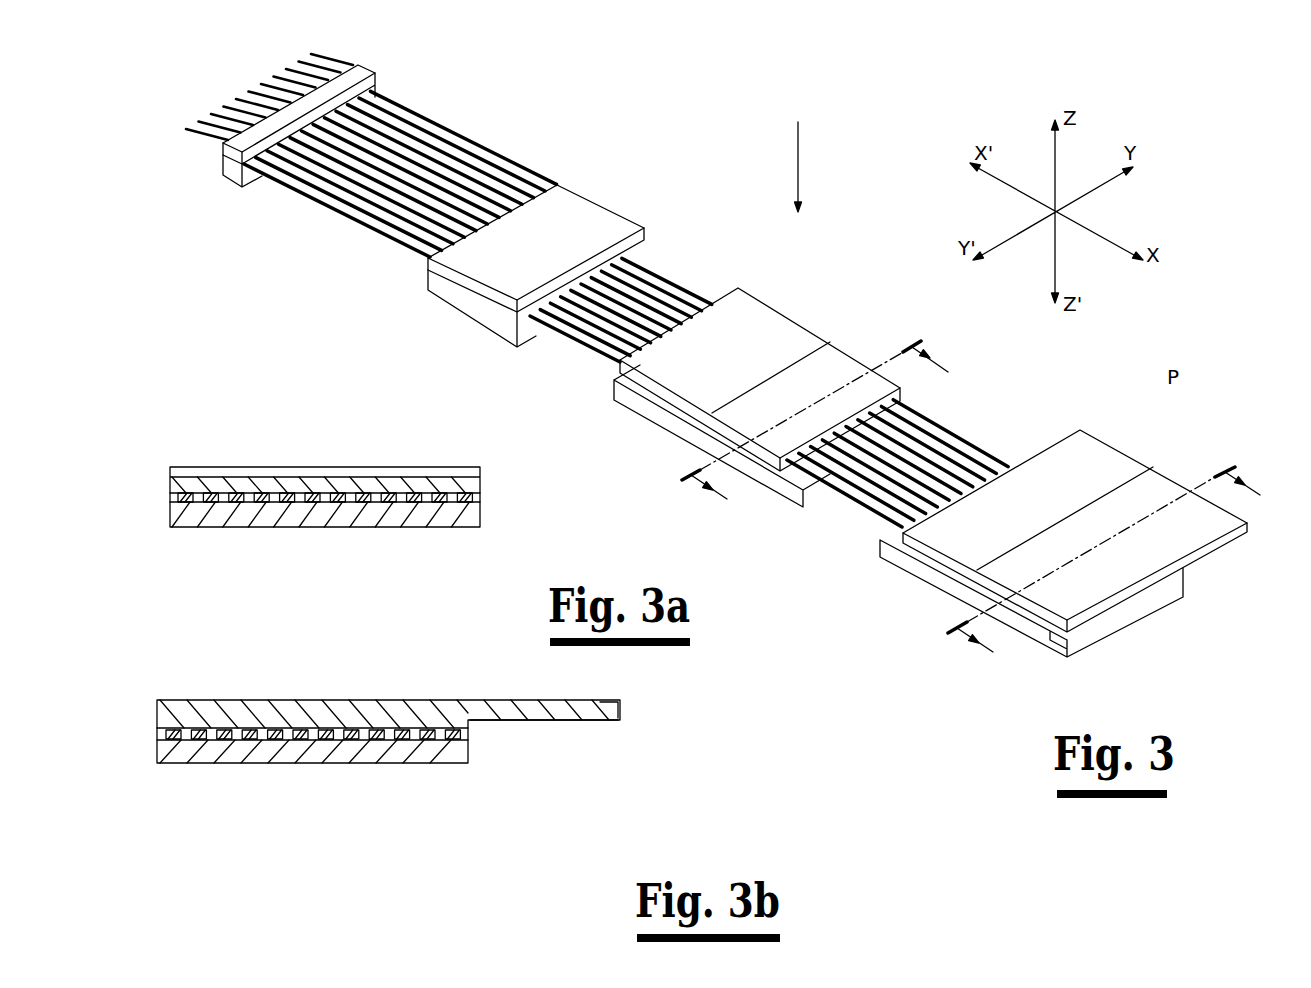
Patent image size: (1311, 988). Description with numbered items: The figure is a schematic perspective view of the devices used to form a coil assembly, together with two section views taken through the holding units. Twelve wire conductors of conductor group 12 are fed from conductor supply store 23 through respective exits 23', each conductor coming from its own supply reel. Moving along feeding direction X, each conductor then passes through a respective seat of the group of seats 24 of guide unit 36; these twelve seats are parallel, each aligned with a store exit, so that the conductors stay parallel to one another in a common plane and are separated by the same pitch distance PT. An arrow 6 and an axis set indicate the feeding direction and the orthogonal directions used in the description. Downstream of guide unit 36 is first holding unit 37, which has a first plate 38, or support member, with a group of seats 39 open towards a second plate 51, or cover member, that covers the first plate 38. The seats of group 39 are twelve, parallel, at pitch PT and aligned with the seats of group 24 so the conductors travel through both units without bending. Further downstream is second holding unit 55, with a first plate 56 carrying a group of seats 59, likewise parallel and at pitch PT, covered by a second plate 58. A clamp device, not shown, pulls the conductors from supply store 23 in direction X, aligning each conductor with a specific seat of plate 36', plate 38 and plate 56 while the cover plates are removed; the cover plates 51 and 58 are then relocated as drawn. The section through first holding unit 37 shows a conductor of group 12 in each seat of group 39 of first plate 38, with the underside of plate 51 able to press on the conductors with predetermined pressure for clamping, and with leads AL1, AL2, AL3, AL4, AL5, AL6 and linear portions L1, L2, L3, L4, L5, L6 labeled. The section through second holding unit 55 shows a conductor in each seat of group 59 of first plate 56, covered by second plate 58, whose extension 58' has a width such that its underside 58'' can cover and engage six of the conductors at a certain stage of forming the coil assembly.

In FIG. 3, the conductor group 12 is at (562, 57).
In FIG. 3B, the conductor group 12 is at (493, 737).
In FIG. 3, the conductor supply store 23 is at (256, 119).
In FIG. 3, the exits 23' is at (318, 99).
In FIG. 3, the pitch distance PT is at (332, 203).
In FIG. 3, the guide unit 36 is at (486, 243).
In FIG. 3, the plate of guide unit 36' is at (536, 223).
In FIG. 3, the group of seats 24 is at (667, 233).
In FIG. 3, the direction indicator 6 is at (798, 150).
In FIG. 3, the first holding unit 37 is at (625, 443).
In FIG. 3, the second plate 51 is at (770, 338).
In FIG. 3A, the second plate 51 is at (278, 478).
In FIG. 3, the first plate 38 is at (675, 423).
In FIG. 3A, the first plate 38 is at (323, 515).
In FIG. 3, the second holding unit 55 is at (883, 612).
In FIG. 3, the second plate 58 is at (1075, 509).
In FIG. 3B, the second plate 58 is at (419, 717).
In FIG. 3, the first plate 56 is at (913, 569).
In FIG. 3B, the first plate 56 is at (338, 752).
In FIG. 3A, the group of seats 39 is at (160, 500).
In FIG. 3A, the linear portion L1 is at (313, 503).
In FIG. 3A, the linear portion L2 is at (287, 503).
In FIG. 3A, the linear portion L3 is at (262, 503).
In FIG. 3A, the linear portion L4 is at (237, 503).
In FIG. 3A, the linear portion L5 is at (212, 503).
In FIG. 3A, the linear portion L6 is at (186, 503).
In FIG. 3A, the lead AL1 is at (465, 503).
In FIG. 3A, the lead AL2 is at (440, 503).
In FIG. 3A, the lead AL3 is at (415, 503).
In FIG. 3A, the lead AL4 is at (390, 503).
In FIG. 3A, the lead AL5 is at (365, 503).
In FIG. 3A, the lead AL6 is at (338, 503).
In FIG. 3B, the group of seats 59 is at (148, 733).
In FIG. 3B, the extension 58' is at (640, 736).
In FIG. 3B, the underside of extension 58'' is at (552, 755).